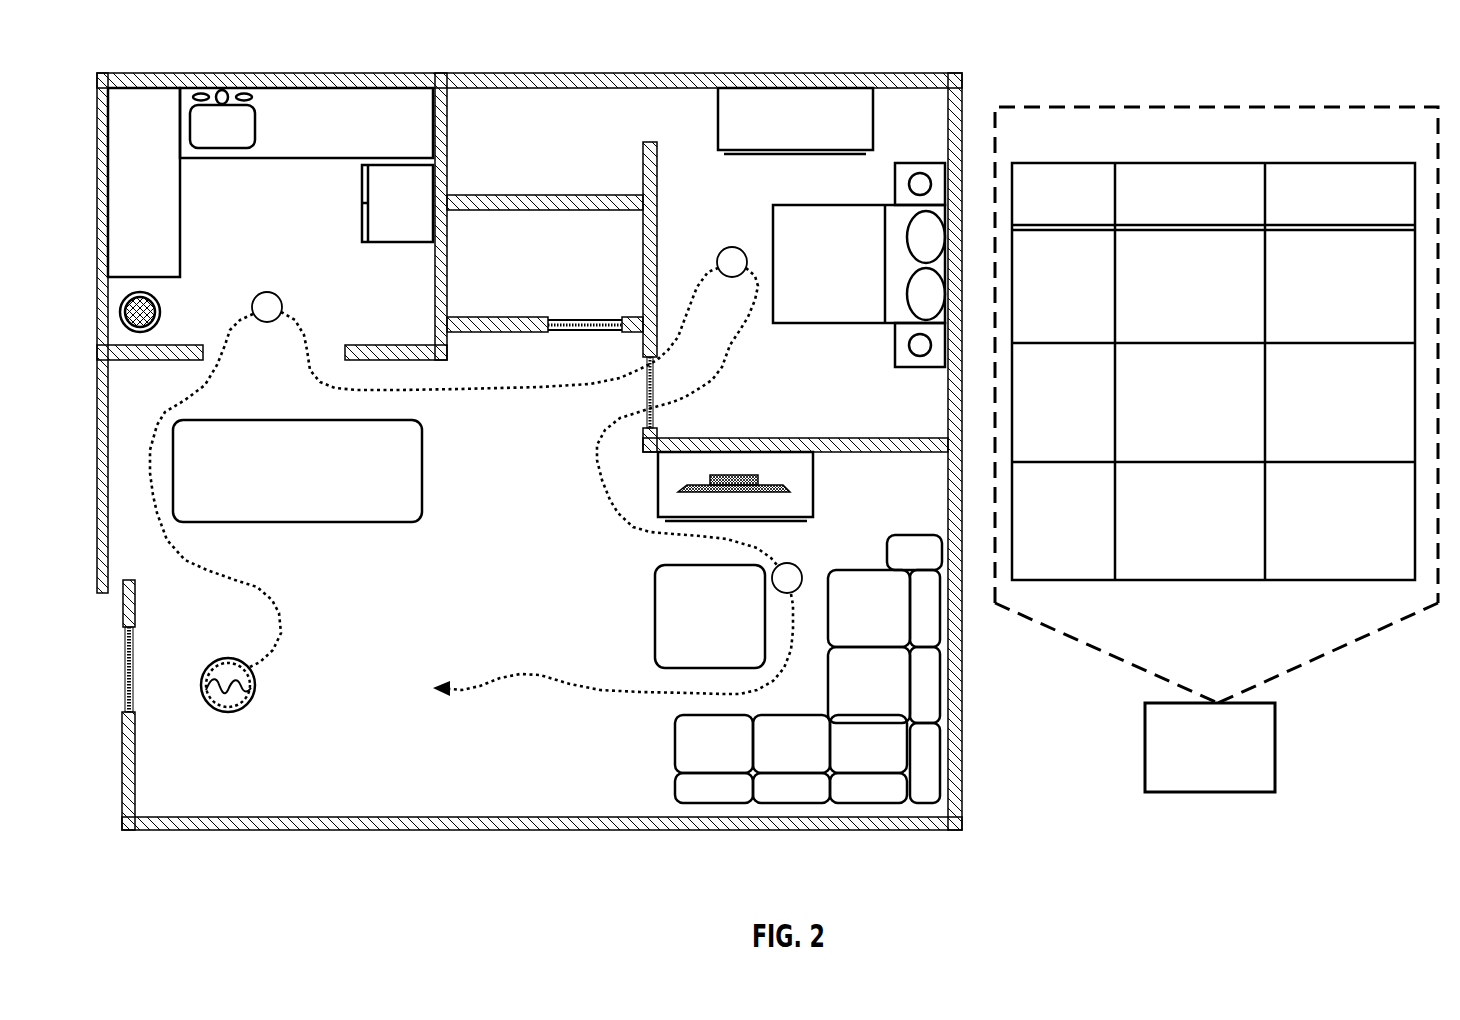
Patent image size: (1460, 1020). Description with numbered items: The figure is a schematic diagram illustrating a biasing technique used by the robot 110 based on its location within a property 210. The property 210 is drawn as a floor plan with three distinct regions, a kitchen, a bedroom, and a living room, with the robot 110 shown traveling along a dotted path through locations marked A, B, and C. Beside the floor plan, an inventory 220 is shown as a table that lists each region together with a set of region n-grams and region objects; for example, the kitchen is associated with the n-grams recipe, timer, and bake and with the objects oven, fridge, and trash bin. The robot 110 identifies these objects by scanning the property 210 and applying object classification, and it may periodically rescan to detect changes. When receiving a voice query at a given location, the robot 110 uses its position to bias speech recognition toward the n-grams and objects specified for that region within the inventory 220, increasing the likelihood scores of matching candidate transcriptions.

The robot 110 is at (226, 663).
The property 210 is at (945, 73).
The inventory 220 is at (1343, 163).